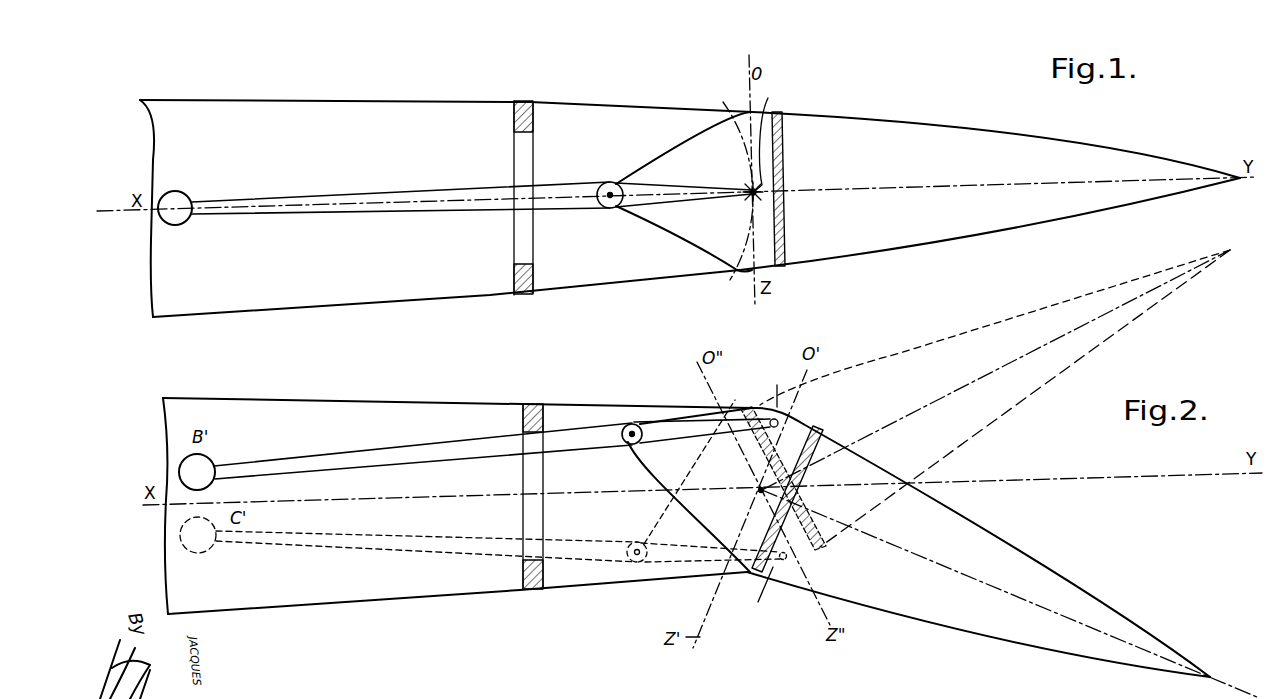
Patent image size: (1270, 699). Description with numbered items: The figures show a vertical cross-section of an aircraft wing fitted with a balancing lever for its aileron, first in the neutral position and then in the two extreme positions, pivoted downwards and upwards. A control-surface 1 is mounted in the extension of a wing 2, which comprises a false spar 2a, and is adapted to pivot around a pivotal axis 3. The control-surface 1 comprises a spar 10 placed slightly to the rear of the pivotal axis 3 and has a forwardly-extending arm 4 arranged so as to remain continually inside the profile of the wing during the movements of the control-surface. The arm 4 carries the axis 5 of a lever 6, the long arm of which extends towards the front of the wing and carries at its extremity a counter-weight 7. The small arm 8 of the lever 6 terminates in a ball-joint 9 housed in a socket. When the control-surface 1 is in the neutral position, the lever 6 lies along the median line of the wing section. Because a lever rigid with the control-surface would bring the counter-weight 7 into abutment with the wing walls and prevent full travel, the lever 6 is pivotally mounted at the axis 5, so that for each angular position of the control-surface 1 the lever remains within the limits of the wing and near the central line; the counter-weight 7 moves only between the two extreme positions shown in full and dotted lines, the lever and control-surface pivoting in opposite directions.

In FIG. 1, the control-surface 1 is at (975, 148).
In FIG. 2, the control-surface 1 is at (1068, 583).
In FIG. 1, the wing 2 is at (322, 105).
In FIG. 2, the wing 2 is at (275, 591).
In FIG. 1, the false spar 2a is at (538, 105).
In FIG. 2, the false spar 2a is at (520, 590).
In FIG. 1, the pivotal axis 3 is at (748, 200).
In FIG. 2, the pivotal axis 3 is at (756, 492).
In FIG. 1, the forwardly-extending arm 4 is at (658, 160).
In FIG. 2, the forwardly-extending arm 4 is at (647, 457).
In FIG. 1, the axis of the lever 5 is at (610, 181).
In FIG. 2, the axis of the lever 5 is at (634, 430).
In FIG. 1, the lever 6 is at (462, 185).
In FIG. 2, the lever 6 is at (408, 446).
In FIG. 1, the counter-weight 7 is at (172, 190).
In FIG. 1, the small arm 8 is at (672, 183).
In FIG. 2, the small arm 8 is at (682, 423).
In FIG. 1, the ball-joint 9 is at (766, 134).
In FIG. 2, the ball-joint 9 is at (760, 490).
In FIG. 1, the spar 10 is at (781, 137).
In FIG. 2, the spar 10 is at (819, 428).